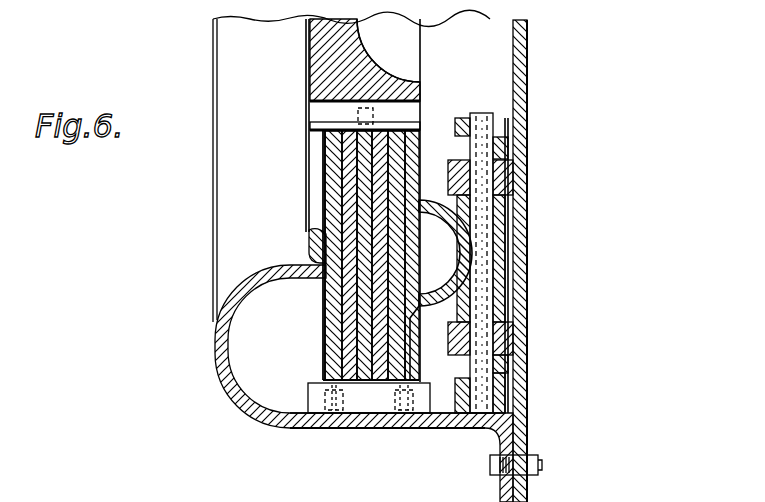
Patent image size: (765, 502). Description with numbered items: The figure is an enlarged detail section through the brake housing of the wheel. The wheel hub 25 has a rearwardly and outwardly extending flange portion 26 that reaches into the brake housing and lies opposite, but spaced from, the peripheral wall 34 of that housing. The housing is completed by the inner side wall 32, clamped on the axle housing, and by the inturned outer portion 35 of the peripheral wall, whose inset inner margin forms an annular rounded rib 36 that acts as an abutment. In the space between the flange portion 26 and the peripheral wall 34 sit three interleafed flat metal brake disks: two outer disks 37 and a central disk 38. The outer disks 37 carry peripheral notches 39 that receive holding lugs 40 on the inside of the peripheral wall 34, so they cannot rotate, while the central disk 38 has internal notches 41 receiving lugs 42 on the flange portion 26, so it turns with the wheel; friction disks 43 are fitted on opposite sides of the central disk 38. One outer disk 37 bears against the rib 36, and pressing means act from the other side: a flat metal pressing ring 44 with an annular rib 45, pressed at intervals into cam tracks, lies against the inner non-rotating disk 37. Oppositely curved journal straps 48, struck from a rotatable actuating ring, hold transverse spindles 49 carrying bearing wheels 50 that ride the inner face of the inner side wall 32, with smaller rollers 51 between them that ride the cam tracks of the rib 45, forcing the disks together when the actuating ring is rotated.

The hub 25 is at (357, 31).
The flange portion 26 is at (381, 93).
The inner side wall 32 is at (528, 379).
The peripheral wall 34 is at (333, 421).
The inturned outer portion 35 is at (216, 343).
The annular rounded rib 36 is at (307, 257).
The outer disks 37 is at (403, 338).
The central disk 38 is at (365, 288).
The notches 39 is at (330, 384).
The holding lugs 40 is at (377, 403).
The notches 41 is at (368, 126).
The lugs 42 is at (318, 122).
The friction disks 43 is at (327, 174).
The pressing ring 44 is at (437, 161).
The annular rib 45 is at (438, 290).
The journal straps 48 is at (499, 138).
The spindles 49 is at (480, 278).
The bearing wheels 50 is at (503, 178).
The rollers 51 is at (503, 233).